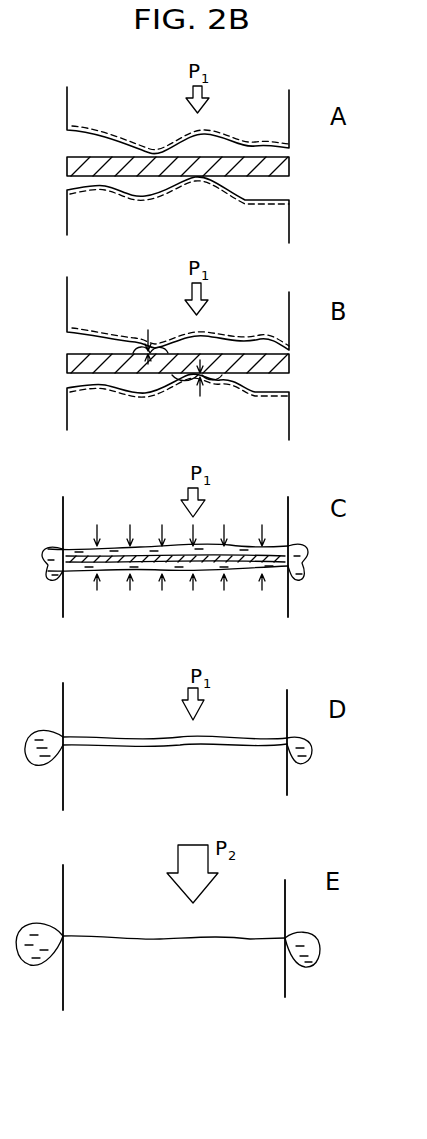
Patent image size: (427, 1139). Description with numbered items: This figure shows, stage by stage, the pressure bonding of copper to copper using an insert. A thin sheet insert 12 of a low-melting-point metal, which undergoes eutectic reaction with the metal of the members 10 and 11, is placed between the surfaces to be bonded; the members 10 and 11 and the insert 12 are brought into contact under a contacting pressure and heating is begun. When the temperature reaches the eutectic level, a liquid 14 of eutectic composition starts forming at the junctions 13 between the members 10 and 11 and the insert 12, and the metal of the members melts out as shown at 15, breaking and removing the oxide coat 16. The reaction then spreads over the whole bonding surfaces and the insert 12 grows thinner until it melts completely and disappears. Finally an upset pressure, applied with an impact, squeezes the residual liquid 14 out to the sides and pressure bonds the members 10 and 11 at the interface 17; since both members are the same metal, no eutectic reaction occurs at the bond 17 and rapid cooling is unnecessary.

The member 10 is at (75, 112).
The member 11 is at (75, 217).
The insert 12 is at (67, 165).
The junction 13 is at (150, 153).
The liquid of eutectic composition 14 is at (168, 347).
The melted-out metal of members 15 is at (145, 345).
The oxide coat 16 is at (253, 135).
The interface (bond) 17 is at (182, 940).